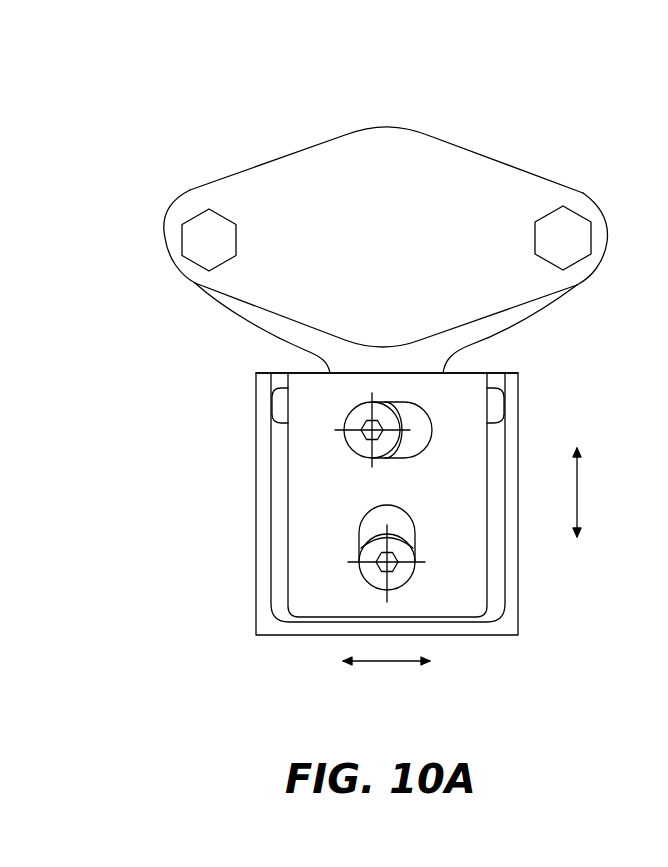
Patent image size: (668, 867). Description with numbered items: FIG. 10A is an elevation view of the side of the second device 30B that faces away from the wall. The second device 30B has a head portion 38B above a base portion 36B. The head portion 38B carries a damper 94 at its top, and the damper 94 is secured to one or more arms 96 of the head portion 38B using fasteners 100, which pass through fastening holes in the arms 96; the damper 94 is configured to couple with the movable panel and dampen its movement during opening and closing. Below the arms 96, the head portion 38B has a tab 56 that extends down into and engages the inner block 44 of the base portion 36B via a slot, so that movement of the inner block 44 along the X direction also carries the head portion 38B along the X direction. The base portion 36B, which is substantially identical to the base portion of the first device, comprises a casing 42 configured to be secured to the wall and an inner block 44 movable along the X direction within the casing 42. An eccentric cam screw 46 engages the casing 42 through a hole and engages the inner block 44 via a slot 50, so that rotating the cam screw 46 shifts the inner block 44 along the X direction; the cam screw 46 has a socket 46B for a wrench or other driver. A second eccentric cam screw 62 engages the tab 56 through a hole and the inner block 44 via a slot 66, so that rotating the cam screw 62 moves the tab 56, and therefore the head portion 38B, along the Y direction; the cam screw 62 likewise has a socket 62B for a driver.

The second device 30B is at (512, 122).
The head portion 38B is at (127, 235).
The damper 94 is at (320, 140).
The arms 96 is at (248, 314).
The fasteners 100 is at (198, 248).
The tab 56 is at (423, 361).
The base portion 36B is at (226, 506).
The casing 42 is at (507, 636).
The inner block 44 is at (302, 588).
The cam screw 62 is at (373, 432).
The socket 62B is at (432, 443).
The slot 66 is at (430, 414).
The slot 50 is at (414, 532).
The cam screw 46 is at (392, 566).
The socket 46B is at (390, 567).